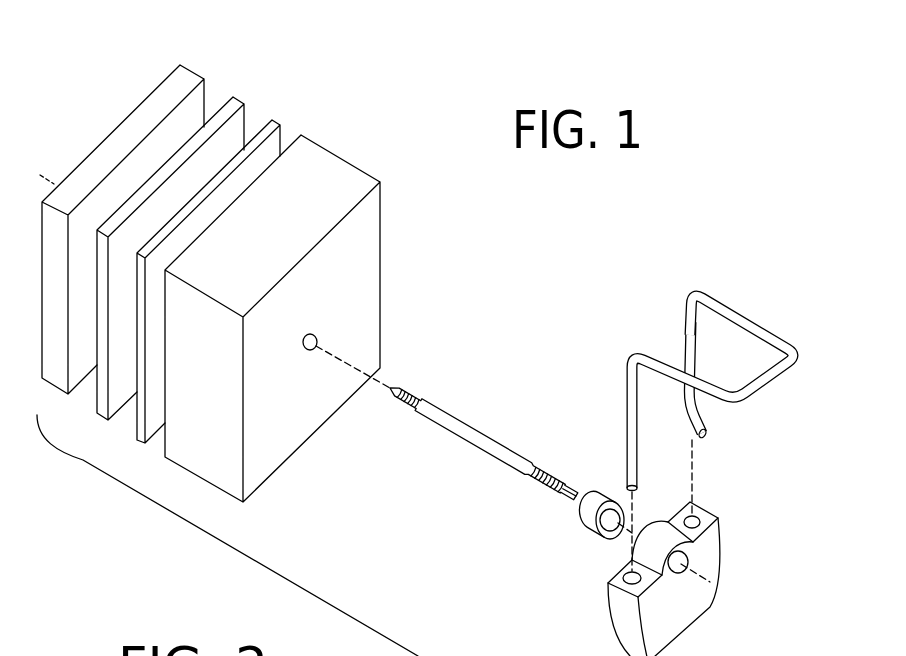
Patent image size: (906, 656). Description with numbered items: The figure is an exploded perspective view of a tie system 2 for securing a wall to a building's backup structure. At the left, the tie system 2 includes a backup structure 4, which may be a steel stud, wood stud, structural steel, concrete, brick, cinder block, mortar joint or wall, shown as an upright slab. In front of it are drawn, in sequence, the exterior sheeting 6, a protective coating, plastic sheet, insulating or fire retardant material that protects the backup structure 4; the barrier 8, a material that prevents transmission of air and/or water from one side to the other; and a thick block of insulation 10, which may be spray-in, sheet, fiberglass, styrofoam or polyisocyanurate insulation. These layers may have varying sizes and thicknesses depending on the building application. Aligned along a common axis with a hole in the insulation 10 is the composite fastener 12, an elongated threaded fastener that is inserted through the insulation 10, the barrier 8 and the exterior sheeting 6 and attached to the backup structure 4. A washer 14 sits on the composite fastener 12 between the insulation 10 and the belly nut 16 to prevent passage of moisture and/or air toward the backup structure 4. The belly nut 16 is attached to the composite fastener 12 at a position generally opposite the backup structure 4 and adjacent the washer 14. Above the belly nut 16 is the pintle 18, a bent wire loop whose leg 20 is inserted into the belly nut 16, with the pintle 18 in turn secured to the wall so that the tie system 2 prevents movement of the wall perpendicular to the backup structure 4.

The tie system 2 is at (466, 214).
The backup structure 4 is at (192, 72).
The exterior sheeting 6 is at (240, 98).
The barrier 8 is at (277, 122).
The insulation 10 is at (323, 150).
The composite fastener 12 is at (487, 432).
The washer 14 is at (597, 493).
The belly nut 16 is at (608, 577).
The pintle 18 is at (741, 411).
The leg 20 is at (637, 489).